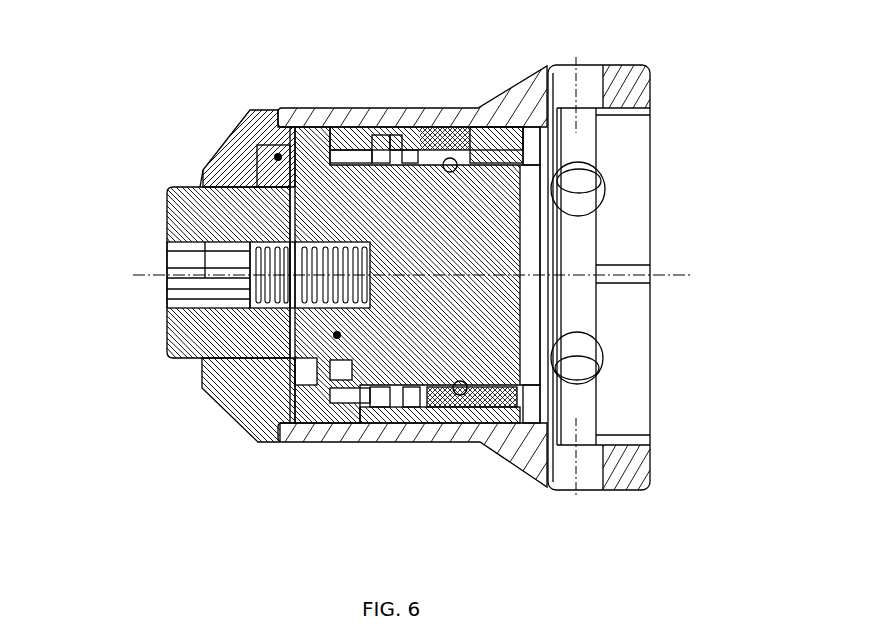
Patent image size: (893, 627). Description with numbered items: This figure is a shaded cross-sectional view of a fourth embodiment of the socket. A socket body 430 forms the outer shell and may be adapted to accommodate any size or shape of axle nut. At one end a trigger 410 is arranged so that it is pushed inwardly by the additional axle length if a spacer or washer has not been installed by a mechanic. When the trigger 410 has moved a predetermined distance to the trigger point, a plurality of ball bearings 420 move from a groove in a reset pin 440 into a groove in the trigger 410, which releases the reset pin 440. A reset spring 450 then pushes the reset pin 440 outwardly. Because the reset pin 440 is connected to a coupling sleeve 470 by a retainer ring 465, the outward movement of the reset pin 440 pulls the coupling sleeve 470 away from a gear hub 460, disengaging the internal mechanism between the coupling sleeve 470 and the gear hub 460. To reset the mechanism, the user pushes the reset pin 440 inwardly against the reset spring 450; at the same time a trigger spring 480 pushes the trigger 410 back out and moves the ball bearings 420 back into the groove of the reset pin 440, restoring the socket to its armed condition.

The trigger 410 is at (548, 403).
The ball bearings 420 is at (462, 398).
The socket body 430 is at (417, 447).
The reset pin 440 is at (337, 335).
The reset spring 450 is at (245, 262).
The gear hub 460 is at (175, 187).
The retainer ring 465 is at (198, 184).
The coupling sleeve 470 is at (278, 157).
The trigger spring 480 is at (443, 127).